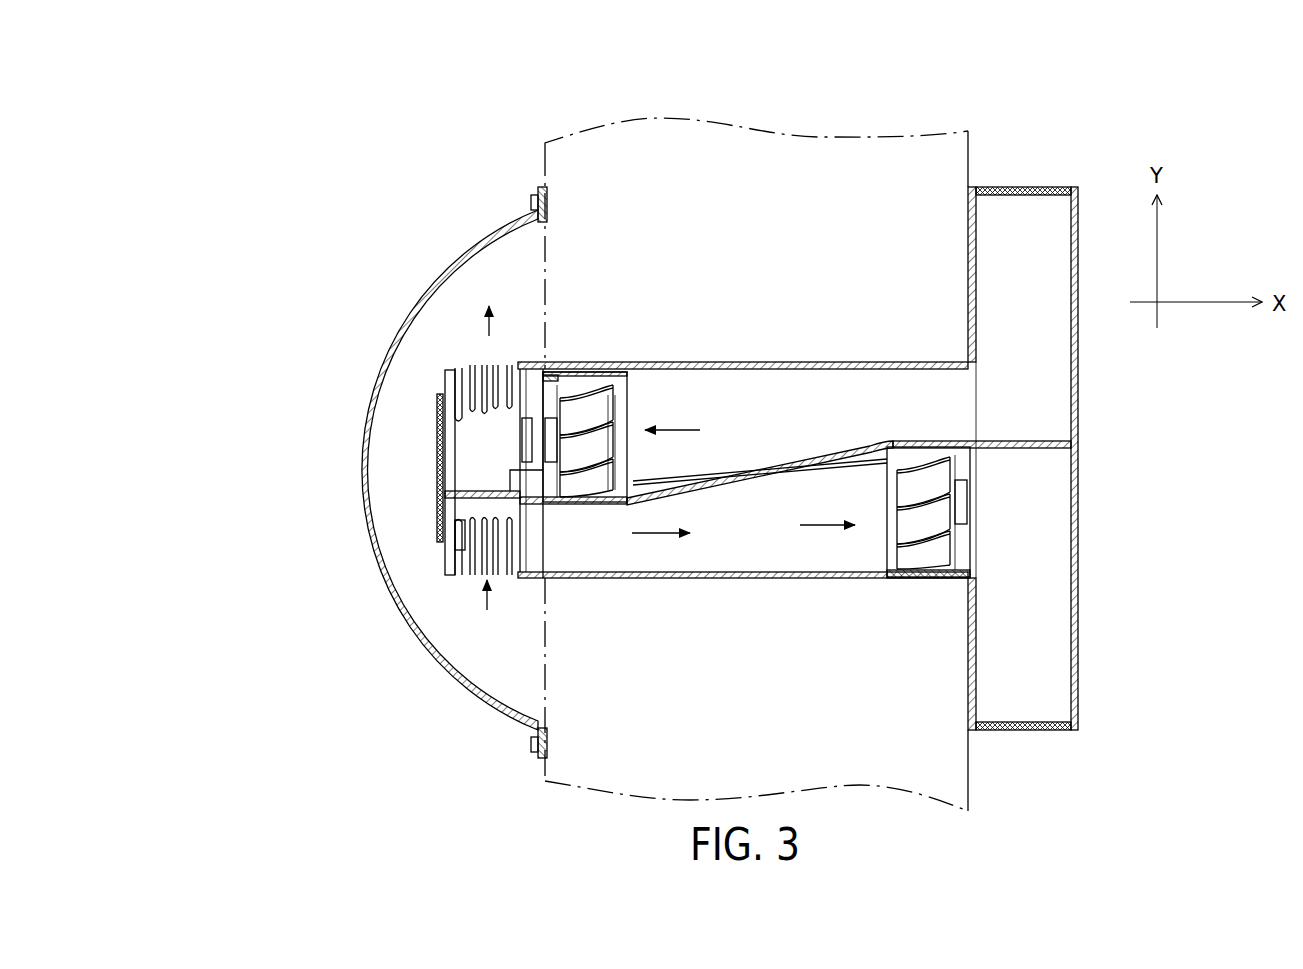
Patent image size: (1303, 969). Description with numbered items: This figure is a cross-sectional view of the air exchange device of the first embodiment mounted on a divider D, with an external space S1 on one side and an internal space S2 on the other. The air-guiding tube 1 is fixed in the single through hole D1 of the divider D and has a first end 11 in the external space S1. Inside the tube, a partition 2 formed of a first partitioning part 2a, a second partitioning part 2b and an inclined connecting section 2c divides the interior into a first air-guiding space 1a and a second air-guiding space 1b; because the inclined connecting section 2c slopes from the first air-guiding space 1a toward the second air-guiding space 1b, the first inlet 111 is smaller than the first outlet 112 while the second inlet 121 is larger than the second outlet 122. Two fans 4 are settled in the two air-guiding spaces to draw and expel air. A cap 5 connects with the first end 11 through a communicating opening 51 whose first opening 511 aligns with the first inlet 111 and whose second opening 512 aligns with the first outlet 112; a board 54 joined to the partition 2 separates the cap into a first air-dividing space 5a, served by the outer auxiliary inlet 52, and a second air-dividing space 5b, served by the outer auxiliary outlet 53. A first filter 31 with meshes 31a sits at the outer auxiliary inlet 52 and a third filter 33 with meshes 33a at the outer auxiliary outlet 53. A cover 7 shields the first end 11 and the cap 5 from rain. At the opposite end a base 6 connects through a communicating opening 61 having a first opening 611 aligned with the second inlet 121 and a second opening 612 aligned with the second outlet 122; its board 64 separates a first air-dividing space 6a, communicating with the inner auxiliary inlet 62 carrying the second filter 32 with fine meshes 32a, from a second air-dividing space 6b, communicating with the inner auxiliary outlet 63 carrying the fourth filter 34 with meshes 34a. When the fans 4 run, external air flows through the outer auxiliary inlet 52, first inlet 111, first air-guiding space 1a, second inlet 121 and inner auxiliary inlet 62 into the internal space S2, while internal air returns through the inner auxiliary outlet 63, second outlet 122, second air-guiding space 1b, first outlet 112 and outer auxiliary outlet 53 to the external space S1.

The air-guiding tube 1 is at (745, 362).
The first air-guiding space 1a is at (750, 580).
The second air-guiding space 1b is at (770, 395).
The partition 2 is at (669, 430).
The first partitioning part 2a is at (600, 504).
The second partitioning part 2b is at (893, 446).
The inclined connecting section 2c is at (762, 466).
The fan 4 is at (592, 397).
The cap 5 is at (437, 410).
The first air-dividing space 5a is at (470, 511).
The second air-dividing space 5b is at (473, 424).
The base 6 is at (1063, 475).
The first air-dividing space 6a is at (1050, 557).
The second air-dividing space 6b is at (1050, 336).
The cover 7 is at (433, 330).
The first end 11 is at (543, 549).
The first filter 31 is at (478, 580).
The meshes 31a is at (500, 582).
The second filter 32 is at (1050, 730).
The meshes 32a is at (1015, 730).
The third filter 33 is at (512, 360).
The meshes 33a is at (533, 362).
The fourth filter 34 is at (993, 187).
The meshes 34a is at (1020, 187).
The communicating opening 51 is at (385, 472).
The outer auxiliary inlet 52 is at (462, 592).
The outer auxiliary outlet 53 is at (476, 352).
The board 54 is at (528, 500).
The communicating opening 61 is at (1046, 436).
The inner auxiliary inlet 62 is at (988, 745).
The inner auxiliary outlet 63 is at (1045, 187).
The board 64 is at (1050, 446).
The first inlet 111 is at (545, 561).
The first outlet 112 is at (553, 378).
The second inlet 121 is at (935, 578).
The second outlet 122 is at (972, 402).
The first opening 511 is at (540, 537).
The second opening 512 is at (540, 455).
The first opening 611 is at (978, 488).
The second opening 612 is at (980, 420).
The external space S1 is at (468, 150).
The internal space S2 is at (1068, 120).
The divider D is at (862, 142).
The through hole D1 is at (672, 580).